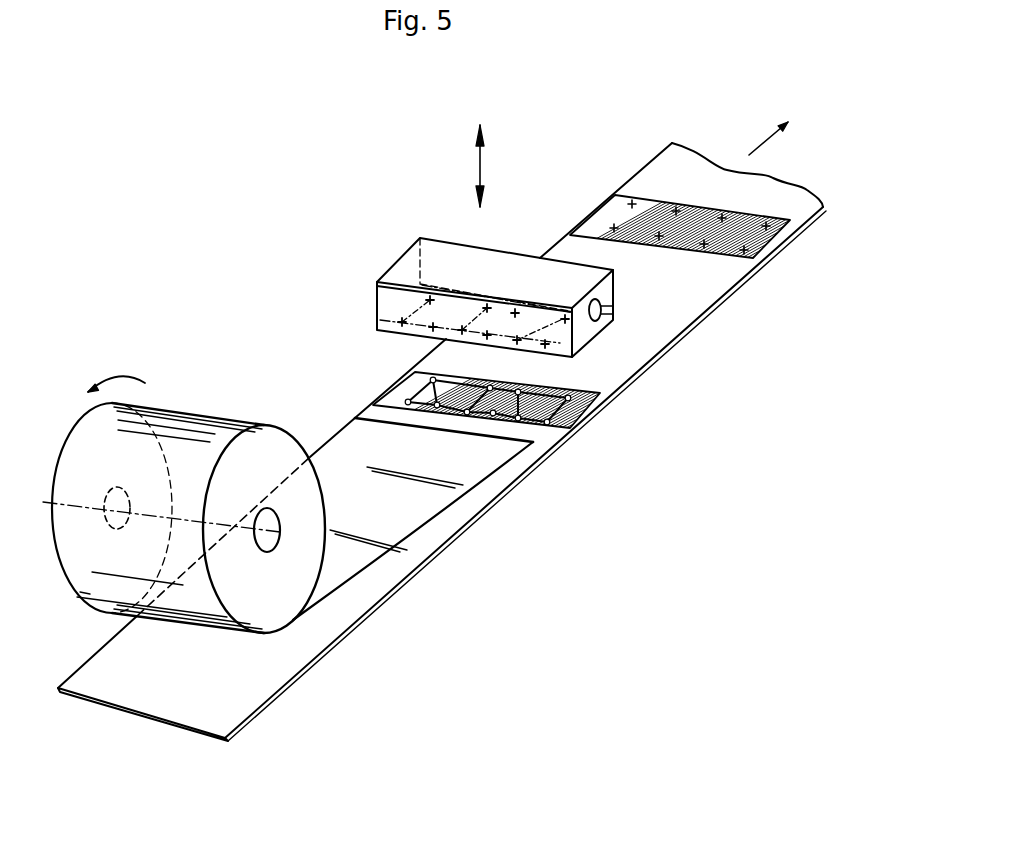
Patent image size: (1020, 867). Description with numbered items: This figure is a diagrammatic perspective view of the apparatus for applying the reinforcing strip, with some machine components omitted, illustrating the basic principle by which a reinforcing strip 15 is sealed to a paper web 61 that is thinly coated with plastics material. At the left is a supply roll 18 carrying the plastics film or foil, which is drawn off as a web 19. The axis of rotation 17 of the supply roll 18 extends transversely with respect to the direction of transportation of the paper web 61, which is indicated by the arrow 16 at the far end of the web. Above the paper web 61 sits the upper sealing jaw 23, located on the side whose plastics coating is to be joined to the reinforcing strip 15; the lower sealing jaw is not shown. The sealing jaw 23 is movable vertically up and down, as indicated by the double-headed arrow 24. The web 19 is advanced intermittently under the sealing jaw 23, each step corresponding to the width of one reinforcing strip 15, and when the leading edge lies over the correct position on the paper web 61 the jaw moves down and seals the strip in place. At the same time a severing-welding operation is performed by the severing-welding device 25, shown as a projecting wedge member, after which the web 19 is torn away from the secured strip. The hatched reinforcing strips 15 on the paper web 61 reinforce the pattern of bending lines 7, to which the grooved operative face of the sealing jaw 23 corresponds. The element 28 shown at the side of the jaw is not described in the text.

The bending lines 7 is at (77, 590).
The reinforcing strip 15 is at (615, 195).
The arrow indicating direction of transportation of the paper web 16 is at (749, 155).
The axis of rotation 17 is at (166, 503).
The supply roll 18 is at (204, 416).
The web of plastics film or foil 19 is at (330, 428).
The upper sealing jaw 23 is at (575, 342).
The double-headed arrow 24 is at (480, 162).
The severing-welding device 25 is at (377, 330).
The side opening / connection 28 is at (603, 308).
The paper web 61 is at (268, 685).